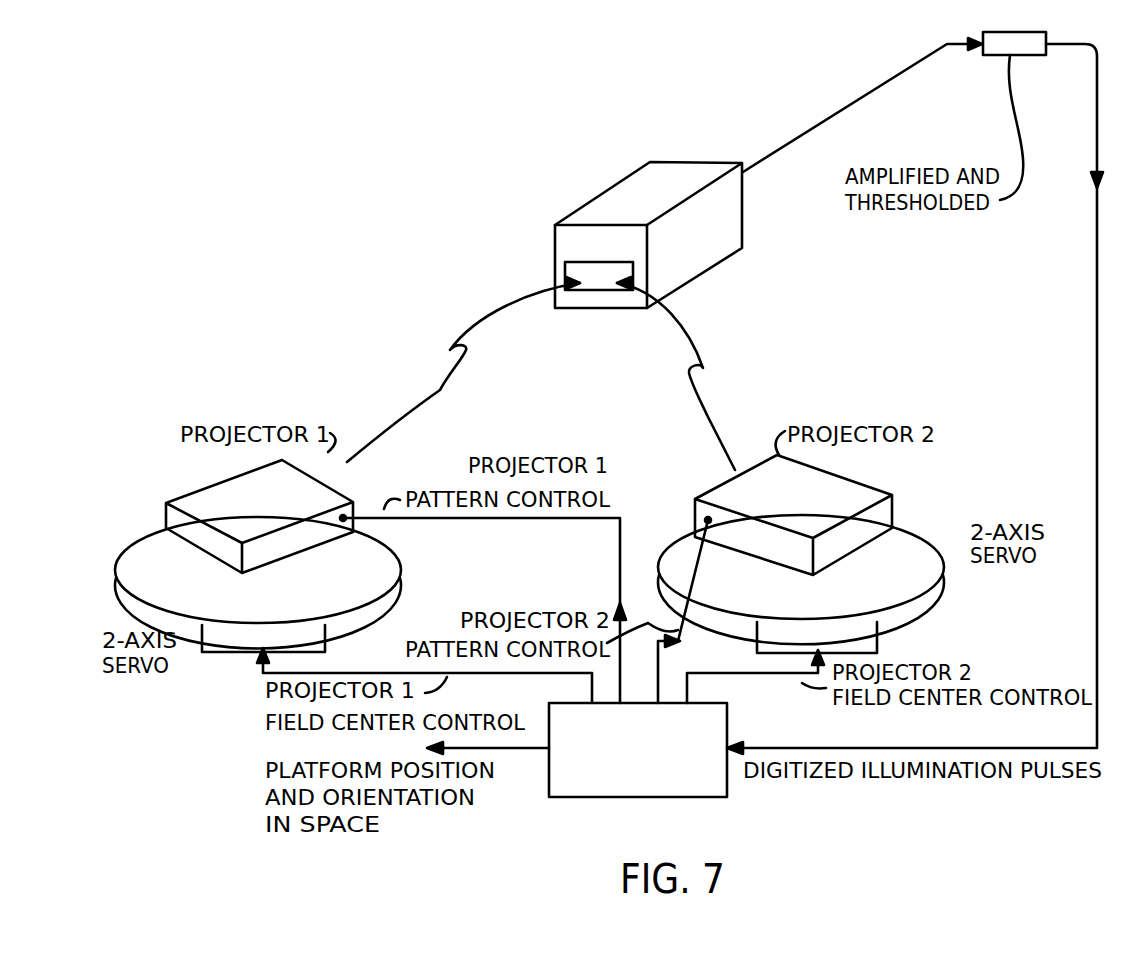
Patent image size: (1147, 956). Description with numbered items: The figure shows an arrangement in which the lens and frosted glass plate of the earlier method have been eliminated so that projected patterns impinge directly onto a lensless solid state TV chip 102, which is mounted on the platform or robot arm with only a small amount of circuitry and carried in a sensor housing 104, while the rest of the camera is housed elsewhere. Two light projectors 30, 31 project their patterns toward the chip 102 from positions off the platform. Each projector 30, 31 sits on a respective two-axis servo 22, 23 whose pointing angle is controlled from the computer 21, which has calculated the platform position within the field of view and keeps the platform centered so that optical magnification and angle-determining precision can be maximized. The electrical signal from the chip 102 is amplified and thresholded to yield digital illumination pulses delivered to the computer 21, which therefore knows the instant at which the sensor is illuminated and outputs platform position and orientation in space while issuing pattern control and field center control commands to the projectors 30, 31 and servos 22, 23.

The detector housing 104 is at (677, 162).
The solid state TV chip 102 is at (597, 283).
The light projector 30 is at (213, 492).
The light projector 31 is at (821, 482).
The 2-axis pointing servo 22 is at (163, 597).
The 2-axis pointing servo 23 is at (932, 540).
The computer 21 is at (567, 795).